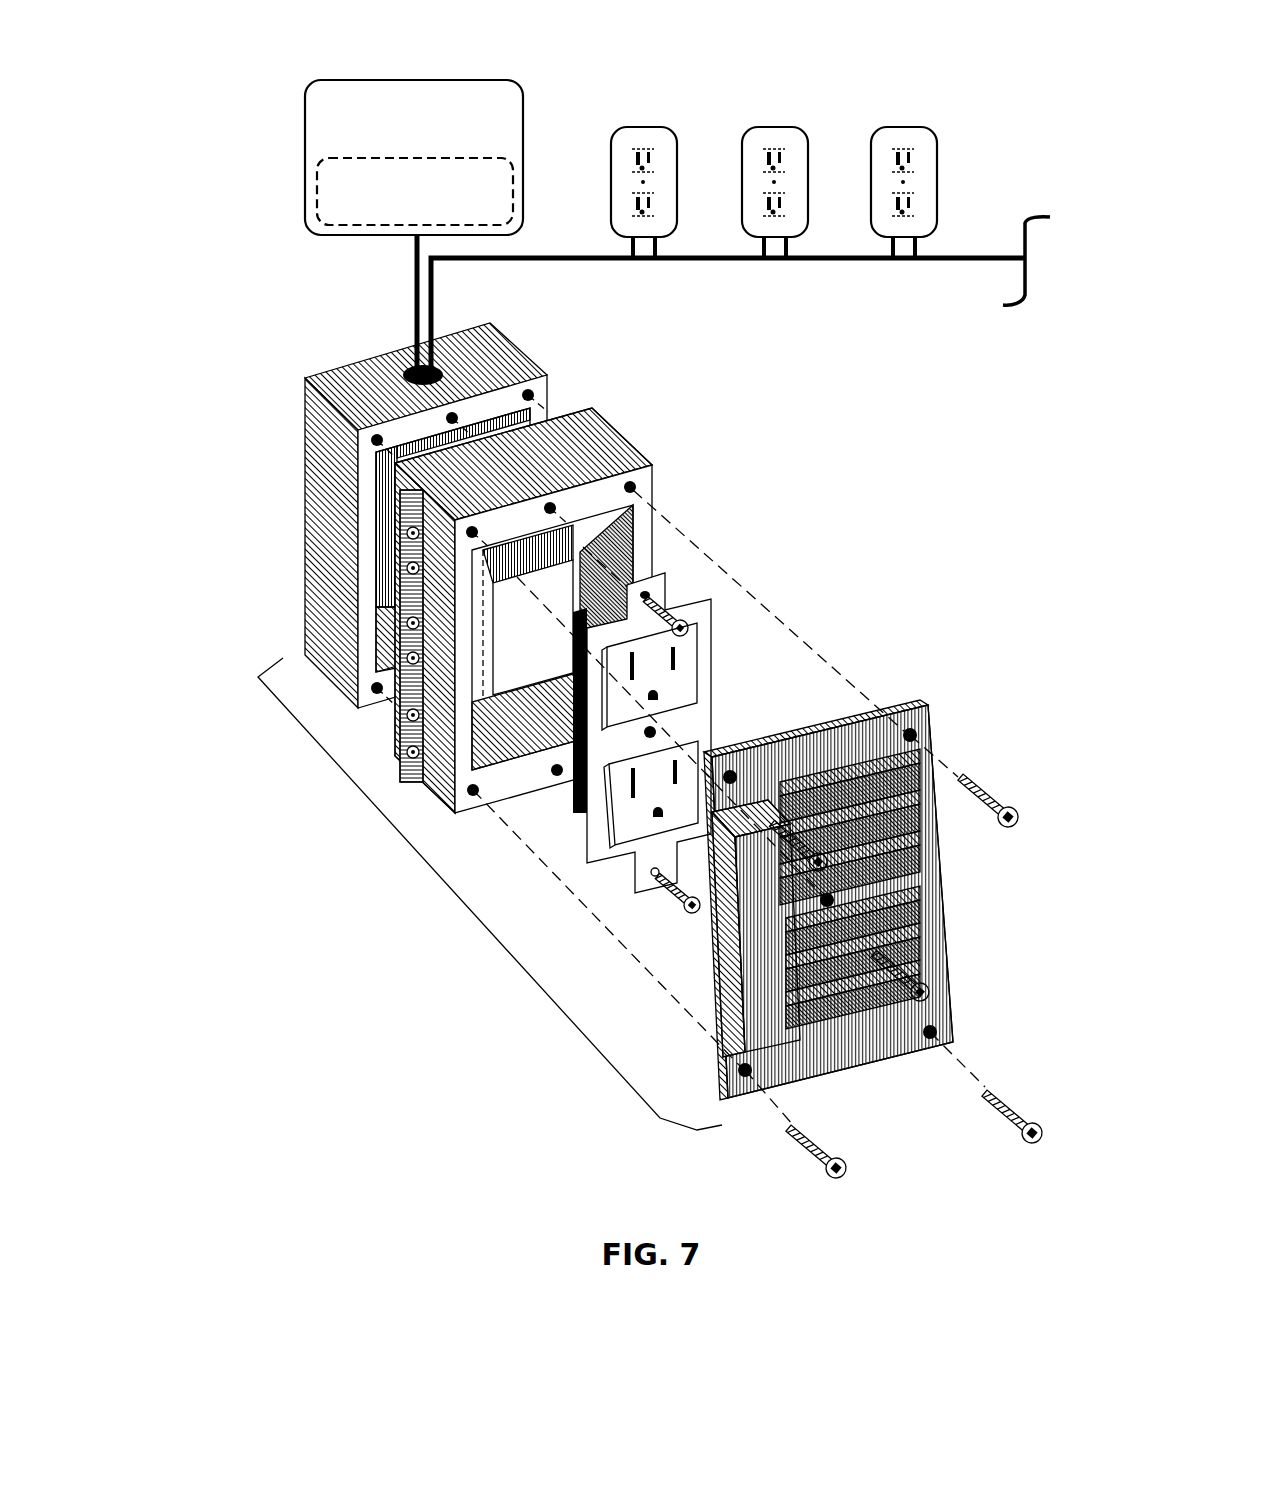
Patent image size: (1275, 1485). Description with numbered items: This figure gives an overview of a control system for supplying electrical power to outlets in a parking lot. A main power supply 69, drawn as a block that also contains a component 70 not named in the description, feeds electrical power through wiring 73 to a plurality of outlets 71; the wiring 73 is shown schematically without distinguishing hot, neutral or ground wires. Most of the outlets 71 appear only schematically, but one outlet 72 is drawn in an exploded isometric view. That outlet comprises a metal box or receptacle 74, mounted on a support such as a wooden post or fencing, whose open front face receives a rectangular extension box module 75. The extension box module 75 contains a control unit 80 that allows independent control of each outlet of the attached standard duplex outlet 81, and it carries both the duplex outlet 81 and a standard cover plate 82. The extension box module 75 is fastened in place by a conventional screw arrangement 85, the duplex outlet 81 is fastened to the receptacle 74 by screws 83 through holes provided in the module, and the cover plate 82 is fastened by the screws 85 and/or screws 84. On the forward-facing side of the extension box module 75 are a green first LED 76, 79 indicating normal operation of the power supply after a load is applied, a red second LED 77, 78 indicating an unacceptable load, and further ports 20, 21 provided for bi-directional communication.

The main power supply 69 is at (305, 138).
The power line communication interface 70 is at (317, 203).
The outlets 71 is at (643, 127).
The outlet 72 is at (424, 862).
The wiring 73 is at (415, 310).
The receptacle 74 is at (540, 343).
The extension box module 75 is at (620, 433).
The first LED 76 is at (405, 533).
The second LED 77 is at (405, 568).
The port 20 is at (405, 623).
The port 21 is at (405, 658).
The second LED 78 is at (405, 715).
The first LED 79 is at (405, 752).
The control unit 80 is at (517, 695).
The duplex outlet 81 is at (712, 655).
The cover plate 82 is at (930, 707).
The screws 83 is at (690, 628).
The screws 84 is at (930, 992).
The screw arrangement 85 is at (820, 855).